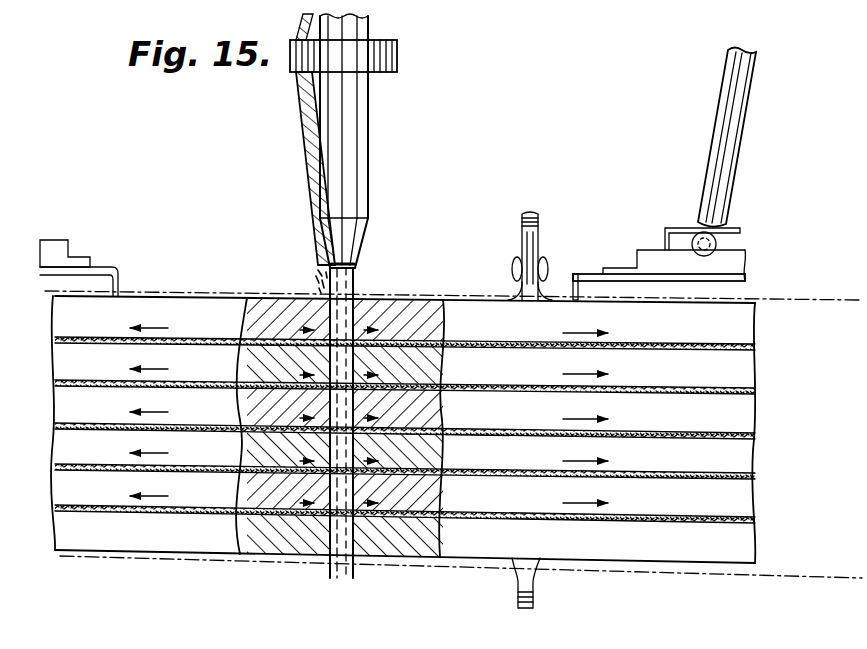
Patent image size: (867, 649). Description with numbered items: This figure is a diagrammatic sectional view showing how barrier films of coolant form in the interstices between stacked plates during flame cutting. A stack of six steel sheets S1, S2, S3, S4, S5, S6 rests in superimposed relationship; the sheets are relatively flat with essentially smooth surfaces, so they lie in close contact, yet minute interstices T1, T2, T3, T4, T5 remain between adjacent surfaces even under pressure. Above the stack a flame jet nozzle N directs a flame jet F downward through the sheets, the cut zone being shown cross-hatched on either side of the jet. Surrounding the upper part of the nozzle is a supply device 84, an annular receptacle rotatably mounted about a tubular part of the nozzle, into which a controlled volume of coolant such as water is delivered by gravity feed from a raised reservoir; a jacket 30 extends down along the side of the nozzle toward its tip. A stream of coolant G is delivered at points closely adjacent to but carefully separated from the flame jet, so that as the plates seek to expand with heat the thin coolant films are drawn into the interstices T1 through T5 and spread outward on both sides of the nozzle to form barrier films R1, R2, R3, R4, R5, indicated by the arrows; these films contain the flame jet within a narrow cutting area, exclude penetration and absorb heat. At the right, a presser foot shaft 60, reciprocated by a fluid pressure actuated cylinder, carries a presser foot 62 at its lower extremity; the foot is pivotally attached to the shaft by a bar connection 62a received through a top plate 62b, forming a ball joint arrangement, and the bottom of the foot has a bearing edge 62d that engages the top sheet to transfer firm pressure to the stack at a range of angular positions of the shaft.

The supply device 84 is at (398, 57).
The nozzle outer jacket 30 is at (305, 221).
The flame jet nozzle N is at (361, 255).
The stream of coolant G is at (316, 273).
The flame jet F is at (352, 292).
The presser foot shaft 60 is at (731, 152).
The presser foot 62 is at (637, 256).
The bar connection 62a is at (729, 226).
The top plate 62b is at (677, 227).
The bearing edge 62d is at (572, 296).
The interstice T1 is at (190, 338).
The interstice T2 is at (191, 380).
The interstice T3 is at (190, 423).
The interstice T4 is at (190, 464).
The interstice T5 is at (190, 505).
The barrier film R1 is at (482, 344).
The barrier film R2 is at (482, 387).
The barrier film R3 is at (481, 431).
The barrier film R4 is at (481, 472).
The barrier film R5 is at (481, 514).
The steel sheet S1 is at (742, 538).
The steel sheet S2 is at (742, 497).
The steel sheet S3 is at (742, 453).
The steel sheet S4 is at (742, 408).
The steel sheet S5 is at (742, 370).
The steel sheet S6 is at (742, 328).